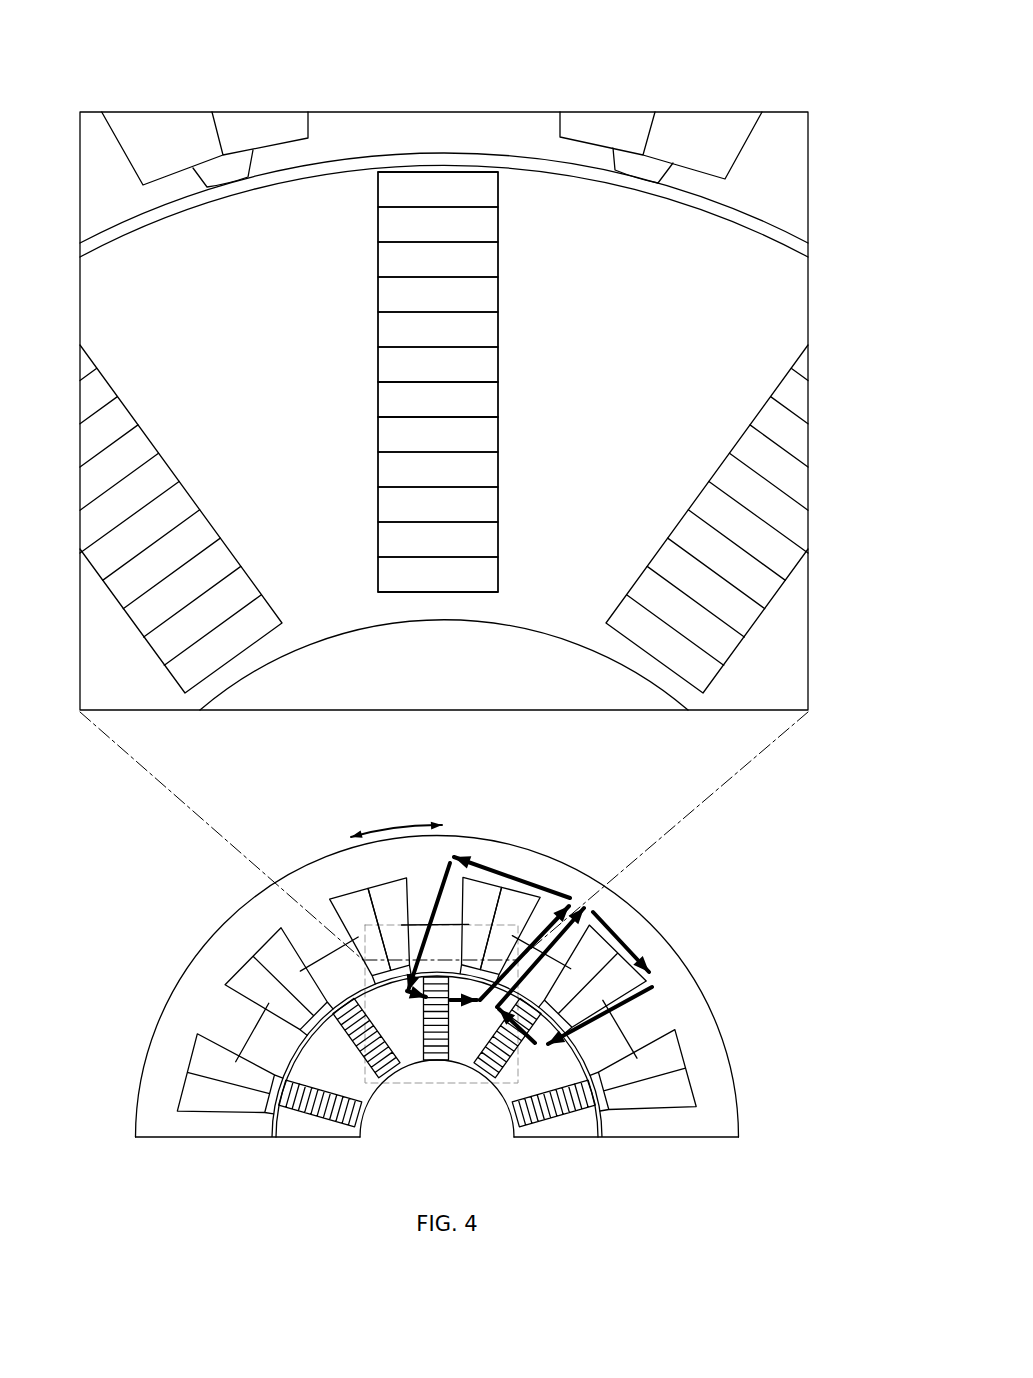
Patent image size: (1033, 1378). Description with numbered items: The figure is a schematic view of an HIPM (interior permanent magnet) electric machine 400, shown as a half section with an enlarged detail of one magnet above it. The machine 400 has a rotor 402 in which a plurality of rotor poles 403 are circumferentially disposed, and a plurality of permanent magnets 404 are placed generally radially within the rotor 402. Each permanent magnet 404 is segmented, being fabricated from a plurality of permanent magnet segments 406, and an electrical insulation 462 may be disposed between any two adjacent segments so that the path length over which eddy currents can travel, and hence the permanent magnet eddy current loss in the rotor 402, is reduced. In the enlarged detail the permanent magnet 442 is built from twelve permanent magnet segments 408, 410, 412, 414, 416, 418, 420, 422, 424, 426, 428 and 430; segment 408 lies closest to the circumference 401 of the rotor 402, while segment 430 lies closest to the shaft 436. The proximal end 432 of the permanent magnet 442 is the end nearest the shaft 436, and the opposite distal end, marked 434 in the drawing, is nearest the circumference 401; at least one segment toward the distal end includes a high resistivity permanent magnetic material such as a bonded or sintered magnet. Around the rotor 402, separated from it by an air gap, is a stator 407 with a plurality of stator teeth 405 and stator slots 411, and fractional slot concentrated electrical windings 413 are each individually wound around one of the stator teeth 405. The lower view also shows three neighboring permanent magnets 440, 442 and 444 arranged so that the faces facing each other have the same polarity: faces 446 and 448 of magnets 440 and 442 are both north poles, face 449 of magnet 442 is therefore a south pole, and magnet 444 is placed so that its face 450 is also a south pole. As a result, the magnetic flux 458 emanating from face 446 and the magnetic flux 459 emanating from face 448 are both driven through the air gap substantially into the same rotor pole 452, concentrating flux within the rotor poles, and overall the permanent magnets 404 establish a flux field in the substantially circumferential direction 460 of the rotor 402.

The HIPM electric machine 400 is at (746, 64).
The circumference 401 is at (103, 246).
The rotor 402 is at (576, 1141).
The rotor poles 403 is at (284, 608).
The permanent magnets 404 is at (484, 1083).
The stator teeth 405 is at (750, 170).
The permanent magnet segments 406 is at (385, 545).
The stator 407 is at (729, 1045).
The permanent magnet segment 408 is at (418, 200).
The permanent magnet segment 410 is at (418, 235).
The stator slots 411 is at (684, 1100).
The permanent magnet segment 412 is at (418, 270).
The fractional slot concentrated electrical windings 413 is at (354, 938).
The permanent magnet segment 414 is at (418, 305).
The permanent magnet segment 416 is at (418, 340).
The permanent magnet segment 418 is at (418, 375).
The permanent magnet segment 420 is at (418, 410).
The permanent magnet segment 422 is at (418, 445).
The permanent magnet segment 424 is at (418, 480).
The permanent magnet segment 426 is at (418, 515).
The permanent magnet segment 428 is at (418, 550).
The permanent magnet segment 430 is at (418, 585).
The proximal end 432 is at (440, 598).
The tooth outer end 434 is at (436, 167).
The shaft 436 is at (368, 688).
The permanent magnet 440 is at (520, 980).
The permanent magnet 442 is at (362, 337).
The permanent magnet 444 is at (380, 1028).
The face 446 is at (491, 1019).
The face 448 is at (453, 989).
The face 449 is at (419, 1023).
The face 450 is at (373, 1017).
The rotor pole 452 is at (543, 917).
The magnetic flux 458 is at (622, 940).
The magnetic flux 459 is at (515, 877).
The circumferential direction 460 is at (403, 826).
The electrical insulation 462 is at (481, 413).